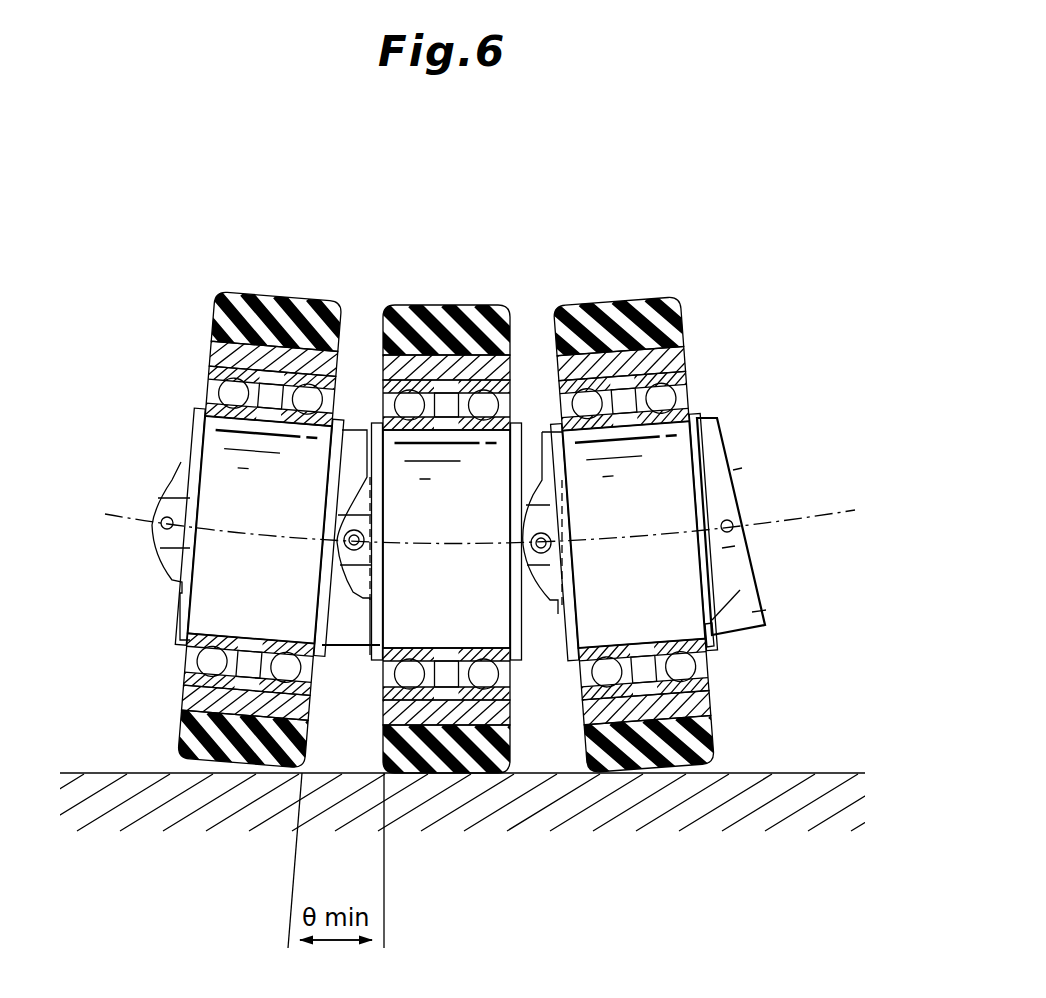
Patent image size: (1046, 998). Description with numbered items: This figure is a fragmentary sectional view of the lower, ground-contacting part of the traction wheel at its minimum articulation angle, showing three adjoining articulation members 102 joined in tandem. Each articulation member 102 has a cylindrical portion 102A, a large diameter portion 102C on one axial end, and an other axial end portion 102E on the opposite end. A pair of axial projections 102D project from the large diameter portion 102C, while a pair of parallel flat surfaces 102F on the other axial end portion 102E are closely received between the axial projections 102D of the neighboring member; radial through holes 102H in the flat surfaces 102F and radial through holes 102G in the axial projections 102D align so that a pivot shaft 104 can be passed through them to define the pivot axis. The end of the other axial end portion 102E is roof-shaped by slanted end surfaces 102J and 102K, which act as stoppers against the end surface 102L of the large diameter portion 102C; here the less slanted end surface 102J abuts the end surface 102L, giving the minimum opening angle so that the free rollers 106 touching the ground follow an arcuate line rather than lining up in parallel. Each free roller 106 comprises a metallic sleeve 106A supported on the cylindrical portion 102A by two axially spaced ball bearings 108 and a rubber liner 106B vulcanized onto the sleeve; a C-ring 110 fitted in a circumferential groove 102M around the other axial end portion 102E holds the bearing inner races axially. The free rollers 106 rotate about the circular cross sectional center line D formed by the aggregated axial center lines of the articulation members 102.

The articulation member 102 is at (208, 606).
The cylindrical portion 102A is at (223, 433).
The large diameter portion 102C is at (195, 418).
The axial projections 102D is at (182, 470).
The other axial end portion 102E is at (712, 416).
The flat surfaces 102F is at (728, 548).
The radial through hole 102G is at (162, 520).
The radial through hole 102H is at (732, 521).
The slanted end surface 102J is at (373, 620).
The slanted end surface 102K is at (373, 465).
The end surface 102L is at (180, 598).
The circumferential groove 102M is at (712, 620).
The pivot shaft 104 is at (345, 541).
The free roller 106 is at (280, 318).
The metallic sleeve 106A is at (410, 365).
The rubber liner 106B is at (490, 320).
The ball bearings 108 is at (265, 676).
The C-ring 110 is at (720, 642).
The circular cross sectional center line D is at (490, 520).